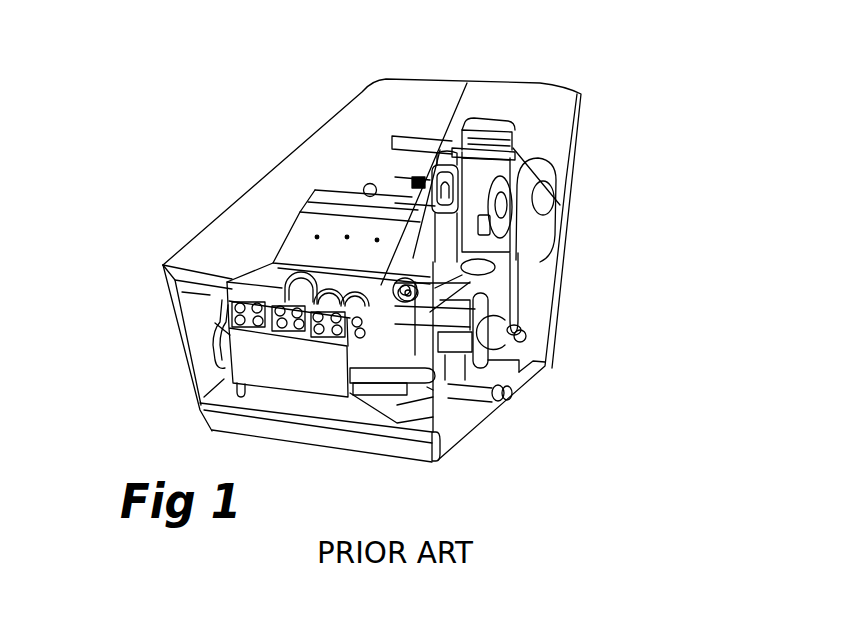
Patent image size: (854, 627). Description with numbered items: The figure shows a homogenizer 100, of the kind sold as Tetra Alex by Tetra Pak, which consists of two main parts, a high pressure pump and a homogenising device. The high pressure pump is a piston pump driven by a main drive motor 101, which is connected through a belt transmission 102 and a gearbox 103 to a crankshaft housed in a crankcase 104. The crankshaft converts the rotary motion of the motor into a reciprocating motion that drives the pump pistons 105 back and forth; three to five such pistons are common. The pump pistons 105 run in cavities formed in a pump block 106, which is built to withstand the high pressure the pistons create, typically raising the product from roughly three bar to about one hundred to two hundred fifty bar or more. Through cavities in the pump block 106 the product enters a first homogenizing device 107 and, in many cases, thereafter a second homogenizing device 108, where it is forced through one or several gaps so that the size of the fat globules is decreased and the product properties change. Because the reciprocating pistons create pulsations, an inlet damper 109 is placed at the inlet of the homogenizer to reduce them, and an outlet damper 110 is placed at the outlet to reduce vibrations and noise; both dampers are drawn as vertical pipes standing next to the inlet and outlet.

The homogenizer 100 is at (272, 86).
The main drive motor 101 is at (517, 138).
The belt transmission 102 is at (532, 194).
The gearbox 103 is at (485, 238).
The crankcase 104 is at (338, 226).
The pump pistons 105 is at (163, 265).
The pump block 106 is at (287, 375).
The first homogenizing device 107 is at (432, 380).
The second homogenizing device 108 is at (455, 355).
The inlet damper 109 is at (492, 282).
The outlet damper 110 is at (483, 309).